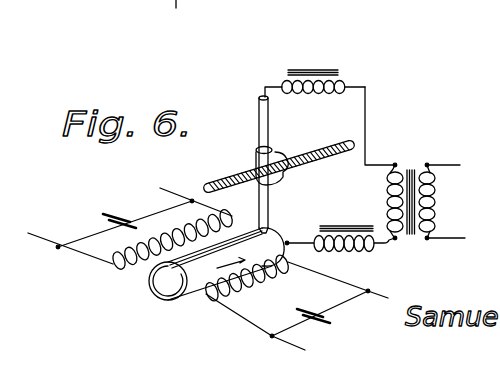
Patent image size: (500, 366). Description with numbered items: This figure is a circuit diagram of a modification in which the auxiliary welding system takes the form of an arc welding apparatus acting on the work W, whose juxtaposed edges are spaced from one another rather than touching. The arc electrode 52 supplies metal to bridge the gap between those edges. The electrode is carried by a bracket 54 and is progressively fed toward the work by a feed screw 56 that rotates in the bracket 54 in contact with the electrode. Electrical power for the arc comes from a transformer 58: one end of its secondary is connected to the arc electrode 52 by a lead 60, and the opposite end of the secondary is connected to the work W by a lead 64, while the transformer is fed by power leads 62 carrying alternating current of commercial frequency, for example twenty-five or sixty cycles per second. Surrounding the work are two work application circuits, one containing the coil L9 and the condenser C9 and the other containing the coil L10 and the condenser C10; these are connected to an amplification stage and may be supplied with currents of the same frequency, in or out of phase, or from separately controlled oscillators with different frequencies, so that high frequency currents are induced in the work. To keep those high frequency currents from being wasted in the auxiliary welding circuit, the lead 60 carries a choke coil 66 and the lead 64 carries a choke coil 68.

The arc electrode 52 is at (273, 219).
The bracket 54 is at (279, 158).
The feed screw 56 is at (327, 148).
The transformer 58 is at (408, 167).
The lead 60 is at (368, 146).
The power leads 62 is at (462, 167).
The lead 64 is at (388, 246).
The choke coil 66 is at (323, 68).
The choke coil 68 is at (353, 250).
The work W is at (160, 290).
The coil L9 is at (113, 258).
The condenser C9 is at (115, 208).
The coil L10 is at (233, 300).
The condenser C10 is at (320, 320).